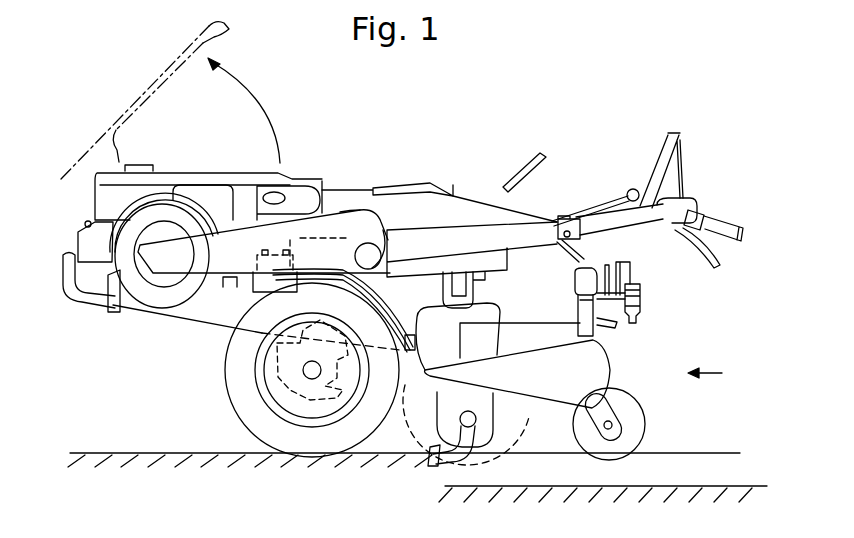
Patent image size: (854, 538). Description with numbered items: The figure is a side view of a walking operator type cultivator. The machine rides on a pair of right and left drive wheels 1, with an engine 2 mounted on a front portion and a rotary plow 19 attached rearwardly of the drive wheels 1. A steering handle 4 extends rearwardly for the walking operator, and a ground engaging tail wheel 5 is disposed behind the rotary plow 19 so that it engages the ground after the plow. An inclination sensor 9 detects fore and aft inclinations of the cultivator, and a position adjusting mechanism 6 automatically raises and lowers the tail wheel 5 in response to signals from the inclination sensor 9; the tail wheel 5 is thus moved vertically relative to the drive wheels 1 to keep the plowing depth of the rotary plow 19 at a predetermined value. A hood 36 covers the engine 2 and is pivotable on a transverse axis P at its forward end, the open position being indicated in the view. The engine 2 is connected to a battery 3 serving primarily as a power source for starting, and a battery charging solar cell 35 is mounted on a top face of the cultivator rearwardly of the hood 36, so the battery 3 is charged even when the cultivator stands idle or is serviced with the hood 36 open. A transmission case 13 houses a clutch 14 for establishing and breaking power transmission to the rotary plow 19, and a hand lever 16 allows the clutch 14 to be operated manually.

The drive wheels 1 is at (245, 422).
The engine 2 is at (215, 282).
The battery 3 is at (257, 277).
The steering handle 4 is at (728, 226).
The tail wheel 5 is at (646, 422).
The position adjusting mechanism 6 is at (660, 325).
The inclination sensor 9 is at (506, 384).
The transmission case 13 is at (383, 238).
The clutch 14 is at (350, 212).
The hand lever 16 is at (571, 260).
The rotary plow 19 is at (437, 470).
The battery charging solar cell 35 is at (455, 182).
The hood 36 is at (297, 180).
The transverse axis P is at (86, 228).